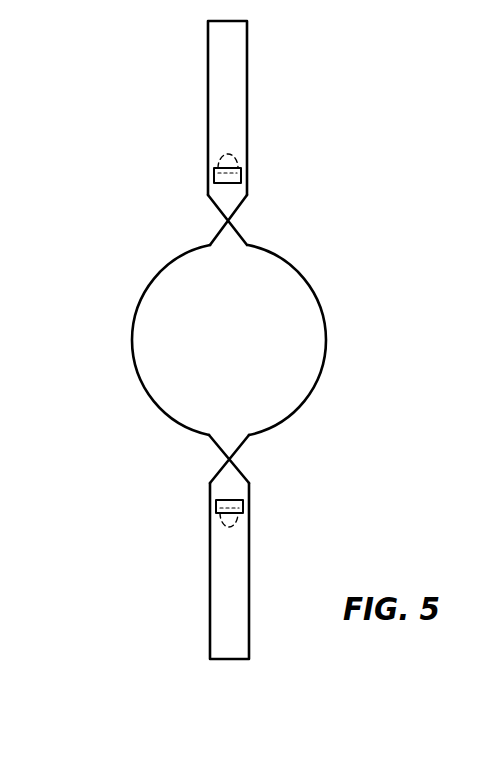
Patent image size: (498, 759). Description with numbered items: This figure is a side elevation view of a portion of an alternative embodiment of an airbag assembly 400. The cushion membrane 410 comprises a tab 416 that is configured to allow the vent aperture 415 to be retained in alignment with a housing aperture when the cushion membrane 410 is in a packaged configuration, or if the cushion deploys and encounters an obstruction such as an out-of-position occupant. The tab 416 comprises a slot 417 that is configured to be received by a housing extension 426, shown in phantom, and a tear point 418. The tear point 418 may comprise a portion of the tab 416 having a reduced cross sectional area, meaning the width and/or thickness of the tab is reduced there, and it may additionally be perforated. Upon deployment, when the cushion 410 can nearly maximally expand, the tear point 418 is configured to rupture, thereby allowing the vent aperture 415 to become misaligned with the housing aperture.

The airbag assembly 400 is at (114, 83).
The cushion membrane 410 is at (122, 341).
The vent aperture 415 is at (163, 373).
The tab 416 is at (237, 64).
The slot 417 is at (241, 176).
The tear point 418 is at (231, 216).
The housing extension 426 is at (214, 171).